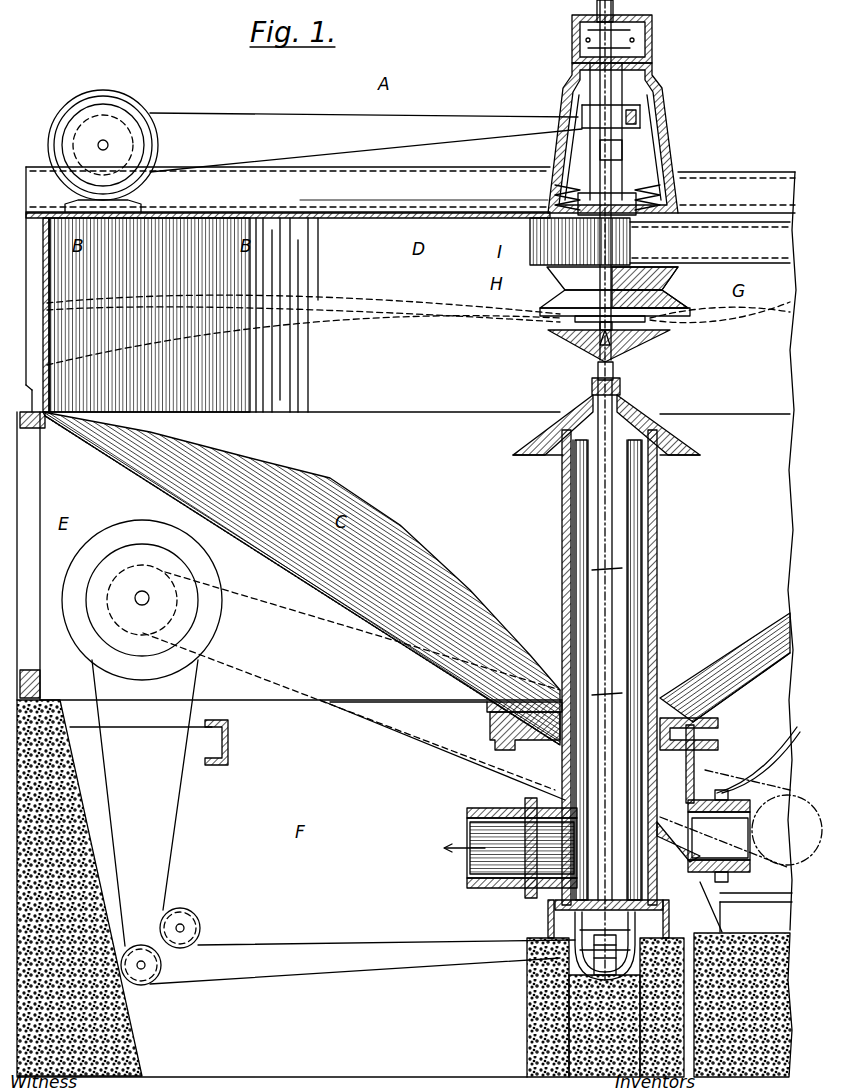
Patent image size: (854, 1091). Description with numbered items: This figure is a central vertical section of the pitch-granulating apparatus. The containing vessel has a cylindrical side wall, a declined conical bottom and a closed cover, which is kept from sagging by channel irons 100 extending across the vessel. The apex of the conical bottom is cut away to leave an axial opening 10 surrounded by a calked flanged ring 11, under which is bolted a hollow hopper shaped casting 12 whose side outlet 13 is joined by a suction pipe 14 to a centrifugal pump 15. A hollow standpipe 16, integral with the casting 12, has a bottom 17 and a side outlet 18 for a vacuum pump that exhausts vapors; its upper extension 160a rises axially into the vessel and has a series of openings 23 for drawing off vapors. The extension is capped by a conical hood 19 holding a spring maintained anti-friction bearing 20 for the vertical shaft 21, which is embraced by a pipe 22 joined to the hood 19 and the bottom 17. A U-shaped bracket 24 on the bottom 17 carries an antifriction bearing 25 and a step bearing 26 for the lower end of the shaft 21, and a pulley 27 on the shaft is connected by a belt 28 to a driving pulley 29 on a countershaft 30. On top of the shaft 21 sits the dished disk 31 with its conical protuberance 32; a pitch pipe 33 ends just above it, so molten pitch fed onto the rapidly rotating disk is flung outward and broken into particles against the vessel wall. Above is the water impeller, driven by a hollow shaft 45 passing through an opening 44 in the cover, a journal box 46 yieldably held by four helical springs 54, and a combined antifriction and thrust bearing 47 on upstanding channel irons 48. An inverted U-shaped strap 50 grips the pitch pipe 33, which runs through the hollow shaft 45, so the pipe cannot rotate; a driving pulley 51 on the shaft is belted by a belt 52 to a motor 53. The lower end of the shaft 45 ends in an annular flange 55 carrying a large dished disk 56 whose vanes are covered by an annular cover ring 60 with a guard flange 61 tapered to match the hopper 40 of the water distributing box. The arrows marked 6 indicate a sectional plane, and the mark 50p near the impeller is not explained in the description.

The motor 53 is at (128, 98).
The belt 52 is at (392, 115).
The channel irons 100 is at (535, 178).
The opening 44 is at (572, 45).
The inverted U-shaped strap 50 is at (650, 38).
The combined antifriction and thrust bearing 47 is at (662, 76).
The driving shaft 45 is at (628, 130).
The channel irons 48 is at (580, 106).
The driving pulley 51 is at (582, 127).
The helical springs 54 is at (570, 190).
The antifriction journal box 46 is at (607, 201).
The pitch pipe 33 is at (618, 5).
The section line 6 is at (590, 10).
The hopper 40 is at (690, 270).
The guard flange 61 is at (672, 283).
The annular cover ring 60 is at (556, 312).
The dished disk 56 is at (592, 326).
The annular flange 55 is at (596, 332).
The lower bearing 50p is at (640, 330).
The dished disk 31 is at (645, 348).
The conical protuberance 32 is at (575, 345).
The spring maintained anti-friction bearing 20 is at (622, 385).
The conical hood 19 is at (532, 445).
The openings 23 is at (566, 462).
The pipe 22 is at (607, 670).
The shaft 21 is at (610, 655).
The standpipe extension 160a is at (656, 612).
The axial opening 10 is at (468, 690).
The flanged ring 11 is at (492, 732).
The hopper shaped casting 12 is at (677, 764).
The standpipe 16 is at (678, 829).
The centrifugal pump 15 is at (748, 780).
The suction pipe 14 is at (782, 836).
The side outlet 13 is at (720, 836).
The side outlet 18 is at (510, 848).
The bottom 17 is at (555, 915).
The antifriction bearing 25 is at (575, 918).
The U-shaped bracket 24 is at (628, 950).
The pulley 27 is at (595, 958).
The step bearing 26 is at (600, 975).
The driving pulley 29 is at (196, 610).
The countershaft 30 is at (142, 605).
The belt 28 is at (316, 944).